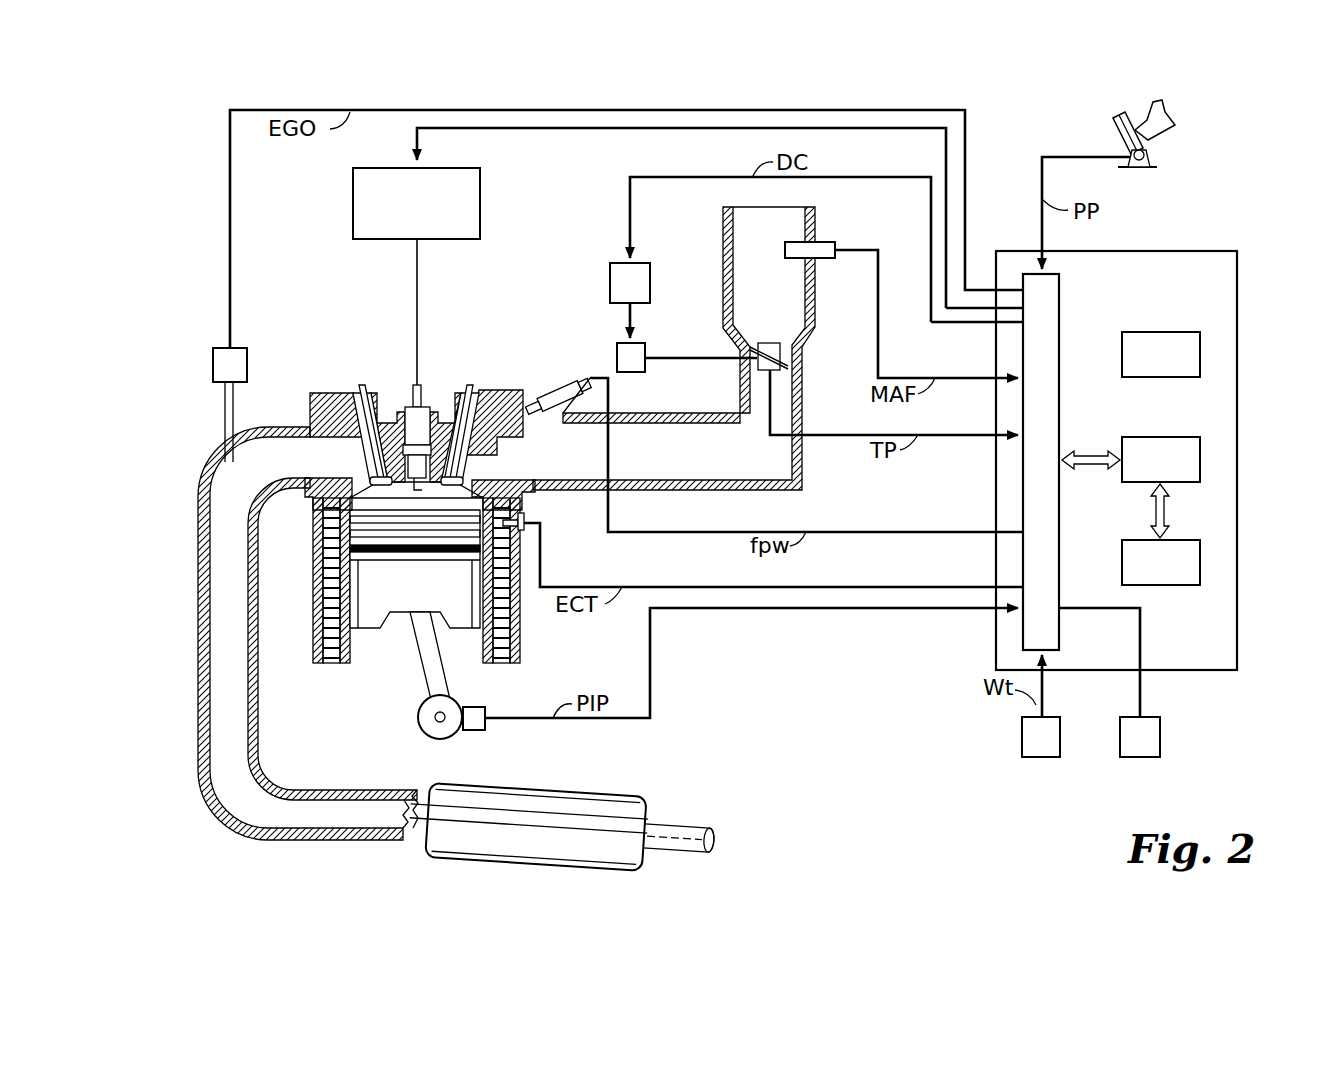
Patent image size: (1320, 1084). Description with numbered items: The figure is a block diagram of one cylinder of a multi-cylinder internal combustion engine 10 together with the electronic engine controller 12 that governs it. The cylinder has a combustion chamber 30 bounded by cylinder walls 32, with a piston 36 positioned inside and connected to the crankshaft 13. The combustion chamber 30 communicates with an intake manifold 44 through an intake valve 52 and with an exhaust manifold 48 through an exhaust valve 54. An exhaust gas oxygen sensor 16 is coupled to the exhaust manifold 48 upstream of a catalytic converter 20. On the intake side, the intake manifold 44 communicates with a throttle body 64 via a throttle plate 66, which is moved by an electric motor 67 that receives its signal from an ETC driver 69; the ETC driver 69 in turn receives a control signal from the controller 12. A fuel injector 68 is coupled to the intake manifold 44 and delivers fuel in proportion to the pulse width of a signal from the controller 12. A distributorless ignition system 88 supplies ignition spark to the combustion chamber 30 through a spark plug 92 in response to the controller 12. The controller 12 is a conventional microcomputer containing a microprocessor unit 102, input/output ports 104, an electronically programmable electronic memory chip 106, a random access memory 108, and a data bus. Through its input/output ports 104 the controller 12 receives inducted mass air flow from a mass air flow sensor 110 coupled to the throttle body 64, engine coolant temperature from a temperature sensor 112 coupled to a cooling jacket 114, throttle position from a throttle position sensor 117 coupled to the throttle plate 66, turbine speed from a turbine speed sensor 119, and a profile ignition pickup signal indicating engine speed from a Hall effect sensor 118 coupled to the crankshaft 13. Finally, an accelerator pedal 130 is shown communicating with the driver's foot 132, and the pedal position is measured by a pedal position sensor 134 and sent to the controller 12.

The internal combustion engine 10 is at (343, 747).
The electronic engine controller 12 is at (1196, 251).
The crankshaft 13 is at (440, 730).
The exhaust gas oxygen sensor 16 is at (234, 348).
The catalytic converter 20 is at (606, 790).
The combustion chamber 30 is at (405, 500).
The cylinder walls 32 is at (352, 665).
The piston 36 is at (420, 598).
The intake manifold 44 is at (674, 348).
The exhaust manifold 48 is at (222, 493).
The intake valve 52 is at (462, 470).
The exhaust valve 54 is at (365, 472).
The throttle body 64 is at (806, 225).
The throttle plate 66 is at (758, 346).
The electric motor 67 is at (645, 344).
The fuel injector 68 is at (556, 390).
The ETC driver 69 is at (648, 264).
The distributorless ignition system 88 is at (436, 168).
The spark plug 92 is at (425, 405).
The microprocessor unit 102 is at (1147, 437).
The input/output ports 104 is at (1062, 320).
The electronic memory chip 106 is at (1146, 332).
The random access memory 108 is at (1175, 540).
The mass air flow sensor 110 is at (828, 242).
The temperature sensor 112 is at (525, 516).
The cooling jacket 114 is at (510, 632).
The throttle position sensor 117 is at (780, 348).
The Hall effect sensor 118 is at (475, 707).
The turbine speed sensor 119 is at (1048, 717).
The accelerator pedal 130 is at (1126, 132).
The foot 132 is at (1170, 120).
The pedal position sensor 134 is at (1160, 160).